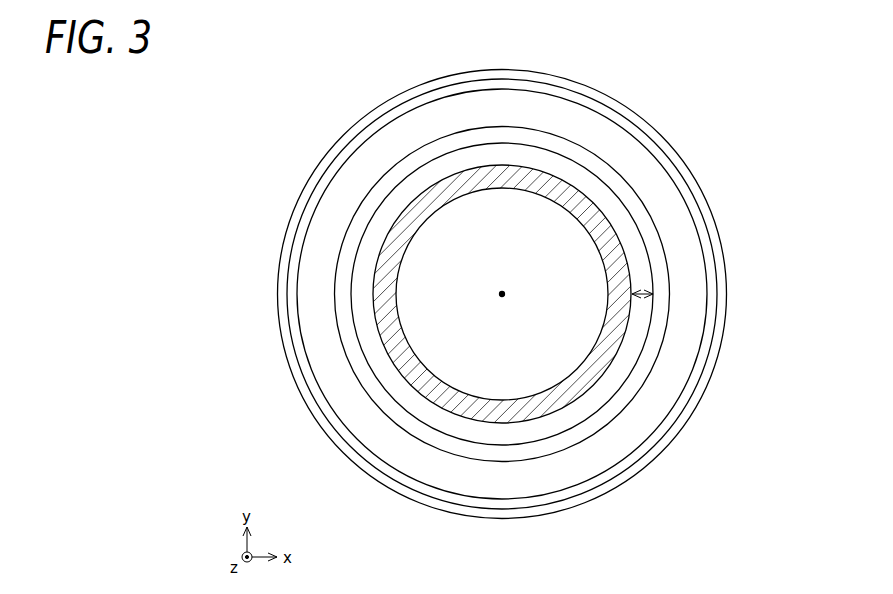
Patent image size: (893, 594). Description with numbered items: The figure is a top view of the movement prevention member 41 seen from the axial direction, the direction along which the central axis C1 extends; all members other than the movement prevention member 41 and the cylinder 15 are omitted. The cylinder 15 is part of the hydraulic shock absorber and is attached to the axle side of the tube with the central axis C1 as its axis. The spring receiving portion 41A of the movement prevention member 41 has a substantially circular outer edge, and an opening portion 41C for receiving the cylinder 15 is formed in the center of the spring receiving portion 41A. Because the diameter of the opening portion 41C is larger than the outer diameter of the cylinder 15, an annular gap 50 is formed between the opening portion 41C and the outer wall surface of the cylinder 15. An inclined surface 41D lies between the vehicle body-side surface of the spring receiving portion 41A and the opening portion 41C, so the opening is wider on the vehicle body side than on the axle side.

The movement prevention member 41 is at (682, 155).
The spring receiving portion 41A is at (677, 223).
The opening portion 41C is at (650, 262).
The inclined surface 41D is at (597, 168).
The annular gap 50 is at (645, 292).
The cylinder 15 is at (615, 330).
The central axis C1 is at (504, 292).